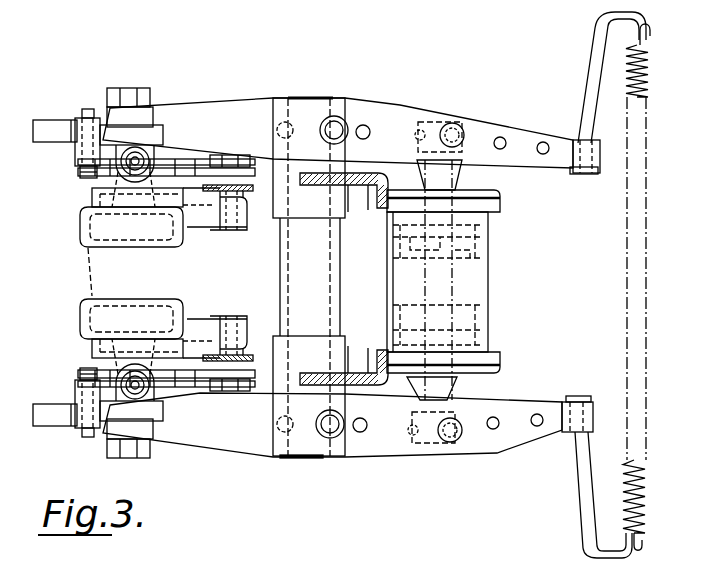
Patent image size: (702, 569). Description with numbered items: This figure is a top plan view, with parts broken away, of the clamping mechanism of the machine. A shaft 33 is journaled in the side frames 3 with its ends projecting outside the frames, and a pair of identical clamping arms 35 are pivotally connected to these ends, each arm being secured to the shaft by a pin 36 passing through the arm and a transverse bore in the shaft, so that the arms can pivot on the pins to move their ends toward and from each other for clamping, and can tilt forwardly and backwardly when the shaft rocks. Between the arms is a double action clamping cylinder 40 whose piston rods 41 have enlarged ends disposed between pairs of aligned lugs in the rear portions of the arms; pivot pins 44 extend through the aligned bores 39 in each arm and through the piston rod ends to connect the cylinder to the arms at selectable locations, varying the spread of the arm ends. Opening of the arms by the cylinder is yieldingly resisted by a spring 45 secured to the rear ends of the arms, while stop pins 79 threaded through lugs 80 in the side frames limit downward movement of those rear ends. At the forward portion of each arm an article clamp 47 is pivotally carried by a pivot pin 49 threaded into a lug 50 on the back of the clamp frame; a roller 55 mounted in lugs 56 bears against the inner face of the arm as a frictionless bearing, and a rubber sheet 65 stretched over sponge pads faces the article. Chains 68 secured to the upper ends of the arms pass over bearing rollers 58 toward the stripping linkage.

The side frames 3 is at (357, 193).
The shaft 33 is at (313, 98).
The clamping arms 35 is at (226, 106).
The pin 36 is at (348, 128).
The aligned bores 39 is at (544, 146).
The double action clamping cylinder 40 is at (488, 287).
The piston rods 41 is at (453, 168).
The pivot pins 44 is at (463, 131).
The spring 45 is at (640, 497).
The article clamp 47 is at (74, 207).
The pivot pin 49 is at (138, 77).
The lug 50 is at (108, 386).
The roller 55 is at (120, 158).
The lugs 56 is at (80, 180).
The bearing roller 58 is at (247, 158).
The sheet 65 is at (88, 296).
The chains 68 is at (156, 171).
The stop pins 79 is at (371, 133).
The lugs 80 is at (364, 169).